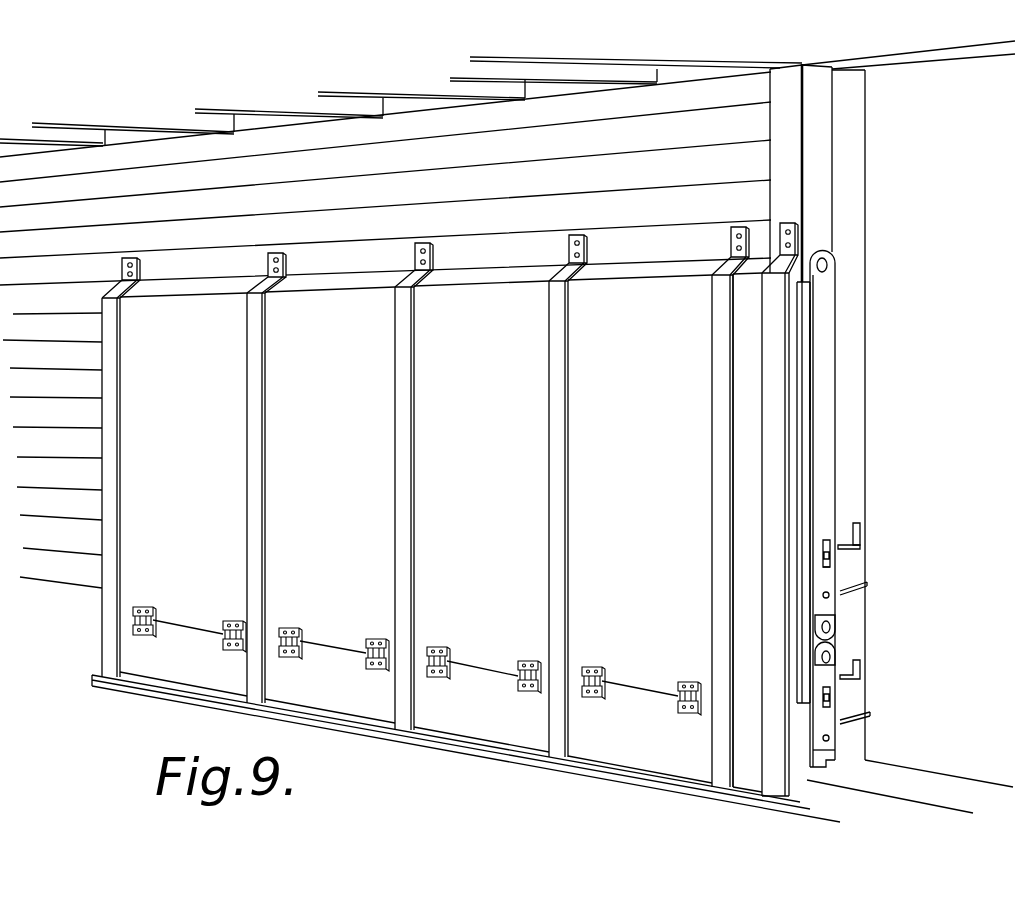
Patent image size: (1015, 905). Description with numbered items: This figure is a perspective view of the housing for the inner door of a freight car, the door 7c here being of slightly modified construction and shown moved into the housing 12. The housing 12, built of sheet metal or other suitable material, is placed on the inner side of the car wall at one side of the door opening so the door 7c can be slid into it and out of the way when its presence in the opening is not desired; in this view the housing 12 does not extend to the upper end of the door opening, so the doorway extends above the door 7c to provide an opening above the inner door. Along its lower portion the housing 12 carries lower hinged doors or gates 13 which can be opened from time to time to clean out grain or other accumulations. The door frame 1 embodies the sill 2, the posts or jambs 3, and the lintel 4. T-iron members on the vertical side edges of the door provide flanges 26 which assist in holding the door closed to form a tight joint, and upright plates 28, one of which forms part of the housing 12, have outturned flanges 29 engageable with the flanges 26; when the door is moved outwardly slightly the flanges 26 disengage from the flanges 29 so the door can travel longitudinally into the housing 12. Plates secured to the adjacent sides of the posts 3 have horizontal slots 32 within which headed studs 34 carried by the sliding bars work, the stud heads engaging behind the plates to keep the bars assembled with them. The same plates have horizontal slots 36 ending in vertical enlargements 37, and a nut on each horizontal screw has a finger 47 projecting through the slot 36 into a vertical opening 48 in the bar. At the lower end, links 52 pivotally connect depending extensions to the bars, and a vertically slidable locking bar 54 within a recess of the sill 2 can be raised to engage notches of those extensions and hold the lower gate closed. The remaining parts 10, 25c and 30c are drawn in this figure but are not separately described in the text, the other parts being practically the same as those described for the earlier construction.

The door frame 1 is at (878, 125).
The sill 2 is at (985, 778).
The posts or jambs 3 is at (850, 178).
The lintel 4 is at (948, 58).
The door 7c is at (823, 424).
The door panel 10 is at (480, 680).
The housing 12 is at (348, 300).
The lower hinged doors or gates 13 is at (337, 697).
The plate lower portion 25c is at (823, 756).
The flanges 26 is at (810, 512).
The upright plates 28 is at (753, 468).
The outturned flanges 29 is at (793, 488).
The latch plate 30c is at (825, 365).
The horizontal slots 32 is at (857, 588).
The headed studs 34 is at (830, 740).
The horizontal slots 36 is at (838, 549).
The vertical enlargements 37 is at (862, 531).
The finger 47 is at (831, 558).
The vertical opening 48 is at (831, 567).
The links 52 is at (835, 640).
The locking bar 54 is at (918, 801).